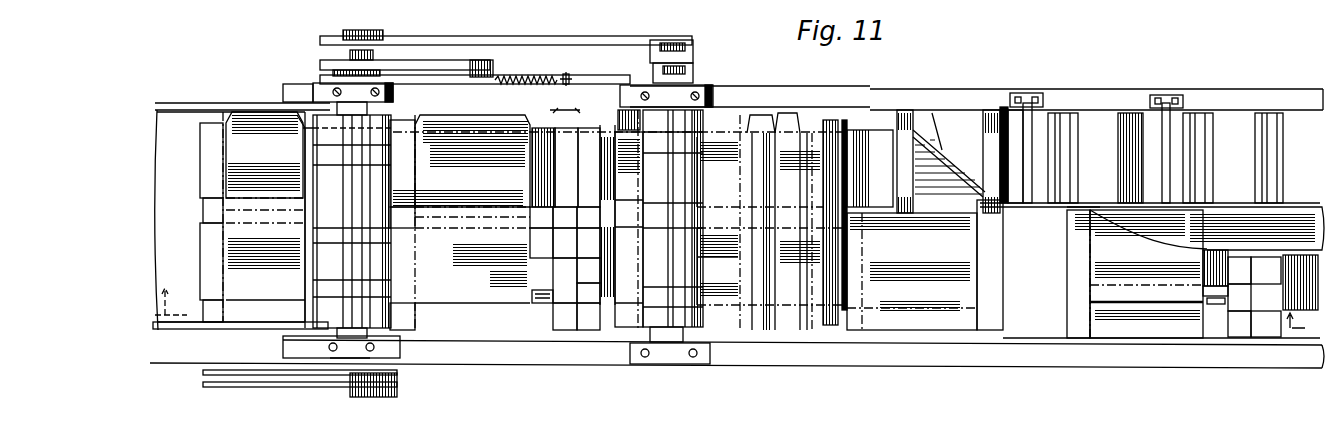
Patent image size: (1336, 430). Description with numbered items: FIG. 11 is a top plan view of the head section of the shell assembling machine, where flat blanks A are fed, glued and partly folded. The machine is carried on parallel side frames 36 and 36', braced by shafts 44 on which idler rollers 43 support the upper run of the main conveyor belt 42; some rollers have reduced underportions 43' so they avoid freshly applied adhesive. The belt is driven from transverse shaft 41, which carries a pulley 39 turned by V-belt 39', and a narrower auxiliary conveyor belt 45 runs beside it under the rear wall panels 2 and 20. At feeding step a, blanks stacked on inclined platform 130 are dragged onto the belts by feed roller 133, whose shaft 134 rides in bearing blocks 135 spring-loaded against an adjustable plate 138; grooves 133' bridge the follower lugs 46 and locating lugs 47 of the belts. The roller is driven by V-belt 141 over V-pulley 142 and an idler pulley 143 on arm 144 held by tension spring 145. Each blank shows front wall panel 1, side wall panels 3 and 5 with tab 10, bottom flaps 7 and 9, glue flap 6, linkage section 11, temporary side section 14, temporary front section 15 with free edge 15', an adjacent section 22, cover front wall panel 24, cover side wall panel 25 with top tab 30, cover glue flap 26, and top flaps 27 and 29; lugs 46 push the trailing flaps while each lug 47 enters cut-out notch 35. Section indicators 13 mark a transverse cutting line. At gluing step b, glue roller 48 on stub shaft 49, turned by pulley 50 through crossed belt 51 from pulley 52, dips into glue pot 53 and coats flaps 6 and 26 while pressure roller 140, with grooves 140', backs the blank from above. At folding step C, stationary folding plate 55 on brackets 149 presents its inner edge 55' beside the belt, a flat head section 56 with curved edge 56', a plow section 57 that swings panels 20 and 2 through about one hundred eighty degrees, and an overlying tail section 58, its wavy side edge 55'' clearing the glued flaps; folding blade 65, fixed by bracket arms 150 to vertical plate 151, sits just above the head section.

The front wall panel 1 is at (378, 283).
The rear wall panel 2 is at (713, 225).
The side wall panel 3 is at (378, 213).
The side wall panel 5 is at (378, 267).
The glue flap 6 is at (938, 225).
The bottom flap 7 is at (645, 229).
The bottom flap 9 is at (211, 261).
The bottom tab 10 is at (309, 264).
The linkage section 11 is at (535, 178).
The posts / section line 13 is at (1225, 140).
The temporary side section 14 is at (541, 217).
The temporary front wall section 15 is at (541, 243).
The free edge 15' is at (565, 280).
The rear wall panel 20 is at (903, 206).
The block 22 is at (565, 217).
The front wall panel 24 is at (565, 243).
The side wall panel 25 is at (902, 320).
The glue flap 26 is at (566, 104).
The top flap 27 is at (929, 206).
The top flap 29 is at (588, 270).
The top tab 30 is at (929, 272).
The cut-out notch 35 is at (547, 320).
The side frame 36 is at (507, 374).
The side frame 36' is at (534, 83).
The pulley 39 is at (296, 406).
The V-belt 39' is at (300, 365).
The transverse shaft 41 is at (357, 398).
The main conveyor belt 42 is at (547, 308).
The idler rollers 43 is at (873, 199).
The underportions 43' is at (814, 227).
The shaft 44 is at (910, 340).
The auxiliary conveyor belt 45 is at (602, 206).
The follower lugs 46 is at (871, 288).
The locating lugs 47 is at (538, 290).
The glue roller 48 is at (720, 107).
The stub shaft 49 is at (672, 40).
The pulley 50 is at (695, 46).
The crossed driving belt 51 is at (585, 42).
The pulley 52 is at (320, 34).
The glue pot 53 is at (735, 107).
The folding plate 55 is at (909, 139).
The inner edge 55' is at (874, 189).
The wavy side edge 55'' is at (940, 71).
The flat head section 56 is at (870, 168).
The downwardly curved edge 56' is at (880, 90).
The plow section 57 is at (957, 163).
The tail section 58 is at (1163, 272).
The folding blade 65 is at (937, 170).
The inclined platform 130 is at (197, 317).
The feed roller 133 is at (373, 220).
The shallow grooves 133' is at (423, 218).
The transverse shaft 134 is at (330, 363).
The bearing block 135 is at (390, 104).
The plate 138 is at (320, 83).
The pressure roller 140 is at (675, 224).
The shallow grooves 140' is at (732, 222).
The V-belt 141 is at (397, 63).
The V-pulley 142 is at (320, 50).
The idler pulley 143 is at (487, 60).
The arm 144 is at (476, 82).
The tension spring 145 is at (545, 78).
The brackets 149 is at (1035, 120).
The bracket arms 150 is at (940, 110).
The vertical plate 151 is at (985, 96).
The flat blanks A is at (194, 149).
The folding step C is at (954, 348).
The feeding step a is at (497, 339).
The gluing step b is at (637, 345).